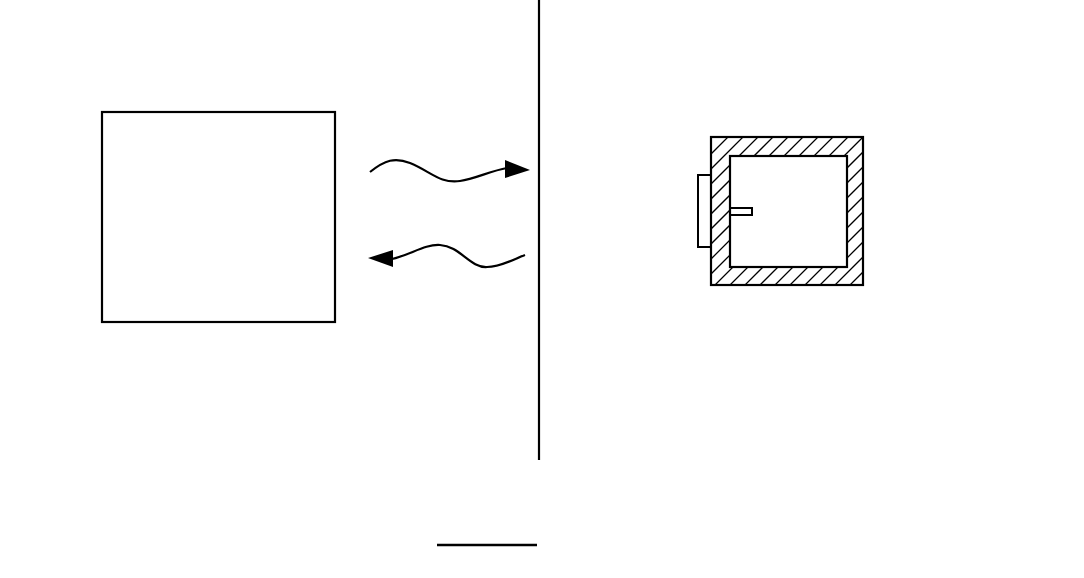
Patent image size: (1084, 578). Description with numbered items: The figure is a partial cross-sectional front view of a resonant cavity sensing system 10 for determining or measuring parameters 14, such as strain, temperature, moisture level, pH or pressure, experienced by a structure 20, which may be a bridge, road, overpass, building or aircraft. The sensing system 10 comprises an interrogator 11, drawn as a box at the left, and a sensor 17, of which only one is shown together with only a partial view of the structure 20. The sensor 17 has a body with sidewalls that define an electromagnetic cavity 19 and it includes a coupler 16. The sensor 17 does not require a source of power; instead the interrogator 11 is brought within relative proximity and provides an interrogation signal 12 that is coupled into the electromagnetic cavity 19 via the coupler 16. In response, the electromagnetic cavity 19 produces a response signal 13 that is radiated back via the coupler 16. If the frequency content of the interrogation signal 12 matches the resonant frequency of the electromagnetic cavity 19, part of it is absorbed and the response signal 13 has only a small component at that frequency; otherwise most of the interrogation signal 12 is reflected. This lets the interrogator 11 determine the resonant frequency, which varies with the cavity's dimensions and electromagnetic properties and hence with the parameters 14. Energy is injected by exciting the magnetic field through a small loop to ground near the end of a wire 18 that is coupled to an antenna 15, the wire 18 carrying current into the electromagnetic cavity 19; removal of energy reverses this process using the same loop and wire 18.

The resonant cavity sensing system 10 is at (98, 100).
The interrogator 11 is at (255, 110).
The interrogation signal 12 is at (453, 182).
The response signal 13 is at (463, 257).
The parameters 14 is at (788, 123).
The antenna 15 is at (698, 200).
The coupler 16 is at (704, 254).
The sensor 17 is at (863, 217).
The wire 18 is at (740, 206).
The electromagnetic cavity 19 is at (807, 252).
The structure 20 is at (773, 410).